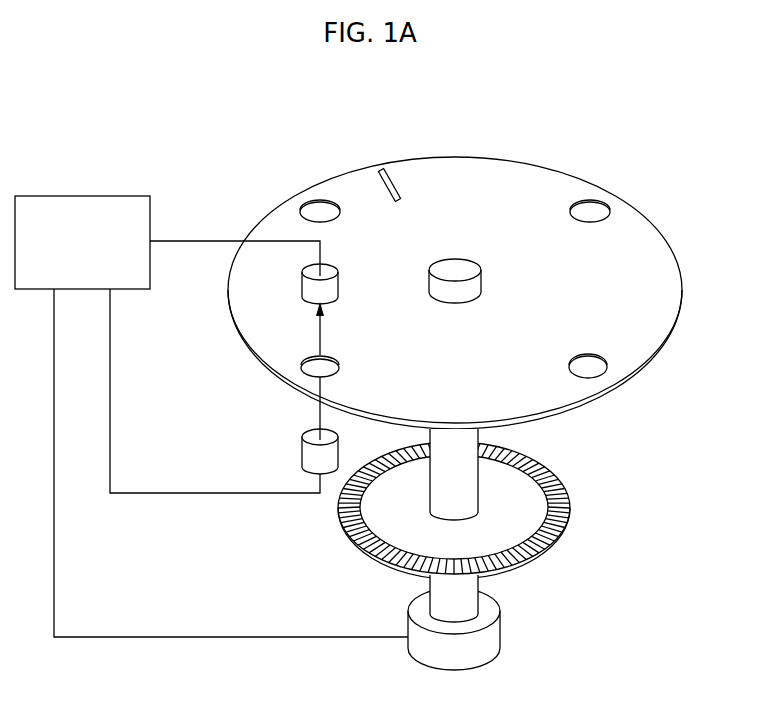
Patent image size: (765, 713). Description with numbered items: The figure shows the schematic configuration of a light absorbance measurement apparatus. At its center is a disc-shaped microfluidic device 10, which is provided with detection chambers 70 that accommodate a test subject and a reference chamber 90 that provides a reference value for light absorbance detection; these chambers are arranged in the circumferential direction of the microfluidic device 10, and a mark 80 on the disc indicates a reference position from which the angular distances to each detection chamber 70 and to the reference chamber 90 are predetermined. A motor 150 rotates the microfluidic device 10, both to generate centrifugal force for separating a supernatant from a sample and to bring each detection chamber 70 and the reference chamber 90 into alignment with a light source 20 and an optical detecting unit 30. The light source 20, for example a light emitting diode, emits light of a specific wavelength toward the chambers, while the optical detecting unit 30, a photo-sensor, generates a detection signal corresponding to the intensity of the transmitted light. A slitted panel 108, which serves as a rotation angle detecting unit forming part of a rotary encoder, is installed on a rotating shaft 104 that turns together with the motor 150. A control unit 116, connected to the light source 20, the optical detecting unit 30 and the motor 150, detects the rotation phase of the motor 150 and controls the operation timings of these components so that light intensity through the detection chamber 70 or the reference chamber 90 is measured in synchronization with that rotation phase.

The microfluidic device 10 is at (663, 221).
The light source 20 is at (302, 453).
The optical detecting unit 30 is at (340, 290).
The detection chambers 70 is at (318, 207).
The mark 80 is at (387, 178).
The reference chamber 90 is at (330, 362).
The rotating shaft 104 is at (480, 582).
The slitted panel 108 is at (523, 490).
The control unit 116 is at (84, 196).
The motor 150 is at (500, 636).